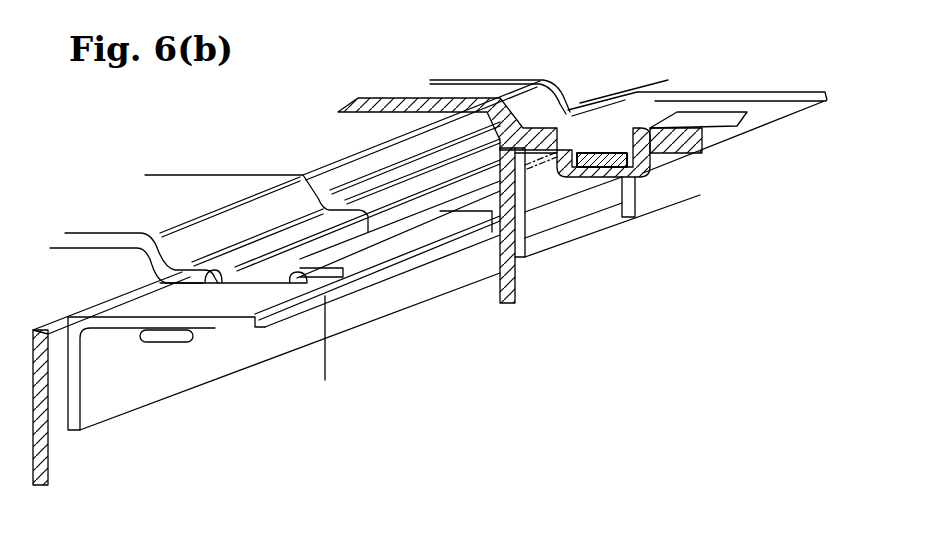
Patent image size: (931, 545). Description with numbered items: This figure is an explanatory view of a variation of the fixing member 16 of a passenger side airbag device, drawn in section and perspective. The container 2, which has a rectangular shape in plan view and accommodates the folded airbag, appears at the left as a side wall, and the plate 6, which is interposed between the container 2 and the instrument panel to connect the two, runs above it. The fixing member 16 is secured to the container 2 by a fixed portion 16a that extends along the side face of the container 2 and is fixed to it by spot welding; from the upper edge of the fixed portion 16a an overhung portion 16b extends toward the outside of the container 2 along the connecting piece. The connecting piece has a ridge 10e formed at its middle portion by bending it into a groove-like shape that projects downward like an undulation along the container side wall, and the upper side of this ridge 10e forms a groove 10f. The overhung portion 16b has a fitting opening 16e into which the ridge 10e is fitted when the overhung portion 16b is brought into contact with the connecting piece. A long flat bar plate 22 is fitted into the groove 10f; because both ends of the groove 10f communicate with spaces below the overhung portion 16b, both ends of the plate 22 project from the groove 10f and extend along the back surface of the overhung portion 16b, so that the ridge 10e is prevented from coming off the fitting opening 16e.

The container 2 is at (48, 462).
The plate 6 is at (199, 188).
The fixing member 16 is at (762, 103).
The fixed portion 16a is at (98, 383).
The overhung portion 16b is at (247, 305).
The fitting opening 16e is at (637, 127).
The ridge 10e is at (625, 178).
The groove 10f is at (590, 122).
The plate 22 is at (192, 337).